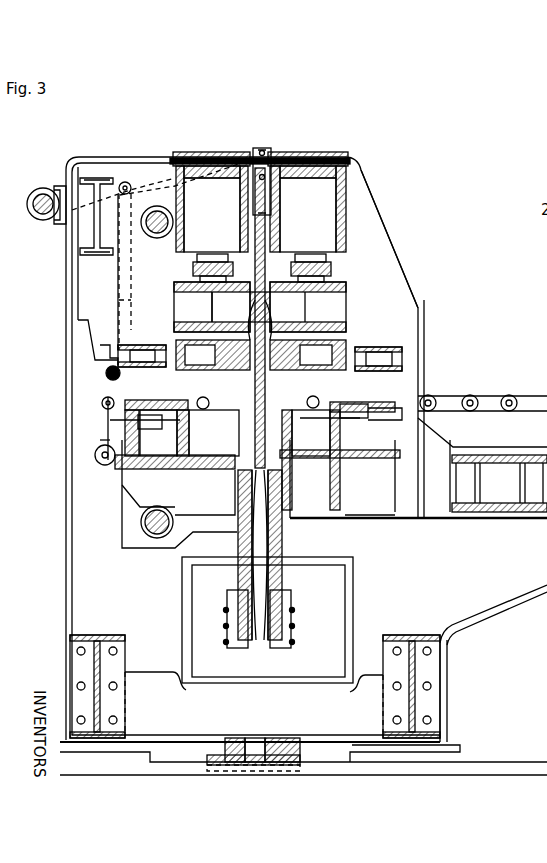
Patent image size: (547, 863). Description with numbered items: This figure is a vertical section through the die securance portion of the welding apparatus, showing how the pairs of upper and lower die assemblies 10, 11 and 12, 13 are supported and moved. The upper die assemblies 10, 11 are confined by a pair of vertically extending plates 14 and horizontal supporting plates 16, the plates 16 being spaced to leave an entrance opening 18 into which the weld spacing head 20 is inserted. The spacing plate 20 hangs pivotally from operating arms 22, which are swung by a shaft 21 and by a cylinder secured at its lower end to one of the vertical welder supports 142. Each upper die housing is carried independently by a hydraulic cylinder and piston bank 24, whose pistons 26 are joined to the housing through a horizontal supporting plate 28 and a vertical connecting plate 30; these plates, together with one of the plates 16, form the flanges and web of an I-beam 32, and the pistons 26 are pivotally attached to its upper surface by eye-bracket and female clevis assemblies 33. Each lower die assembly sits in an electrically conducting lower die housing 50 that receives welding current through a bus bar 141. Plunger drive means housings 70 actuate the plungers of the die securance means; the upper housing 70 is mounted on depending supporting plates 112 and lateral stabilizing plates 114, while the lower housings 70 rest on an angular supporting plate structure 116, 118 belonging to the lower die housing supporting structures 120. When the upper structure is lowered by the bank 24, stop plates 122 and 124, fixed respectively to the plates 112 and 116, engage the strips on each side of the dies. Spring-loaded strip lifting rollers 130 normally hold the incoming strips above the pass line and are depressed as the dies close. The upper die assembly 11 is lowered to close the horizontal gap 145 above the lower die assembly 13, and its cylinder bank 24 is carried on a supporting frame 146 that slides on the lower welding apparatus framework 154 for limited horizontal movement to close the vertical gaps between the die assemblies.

The upper die assembly 10 is at (271, 318).
The upper die assembly 11 is at (310, 316).
The lower die assembly 12 is at (240, 570).
The lower die assembly 13 is at (285, 522).
The vertically extending plates 14 is at (368, 306).
The horizontal supporting plates 16 is at (215, 360).
The entrance opening 18 is at (308, 340).
The weld spacing head 20 is at (268, 245).
The shaft 21 is at (30, 210).
The operating arms 22 is at (105, 177).
The hydraulic cylinder and piston bank 24 is at (128, 182).
The pistons 26 is at (207, 160).
The horizontally extending supporting plate 28 is at (185, 275).
The vertical connecting plate 30 is at (210, 320).
The I-beam 32 is at (172, 345).
The eye-bracket and female clevis assemblies 33 is at (311, 268).
The lower die housing 50 is at (225, 520).
The plunger drive means housing 70 is at (165, 352).
The depending supporting plates 112 is at (102, 404).
The lateral stabilizing plates 114 is at (355, 360).
The supporting plate 116 is at (175, 428).
The supporting plate 118 is at (118, 498).
The lower die housing supporting structures 120 is at (160, 540).
The stop plate 122 is at (118, 425).
The stop plate 124 is at (125, 445).
The strip lifting rollers 130 is at (400, 520).
The bus bar 141 is at (290, 588).
The vertical welder supports 142 is at (66, 515).
The horizontal gap 145 is at (215, 466).
The supporting frame 146 is at (392, 245).
The lower welding apparatus framework 154 is at (95, 372).